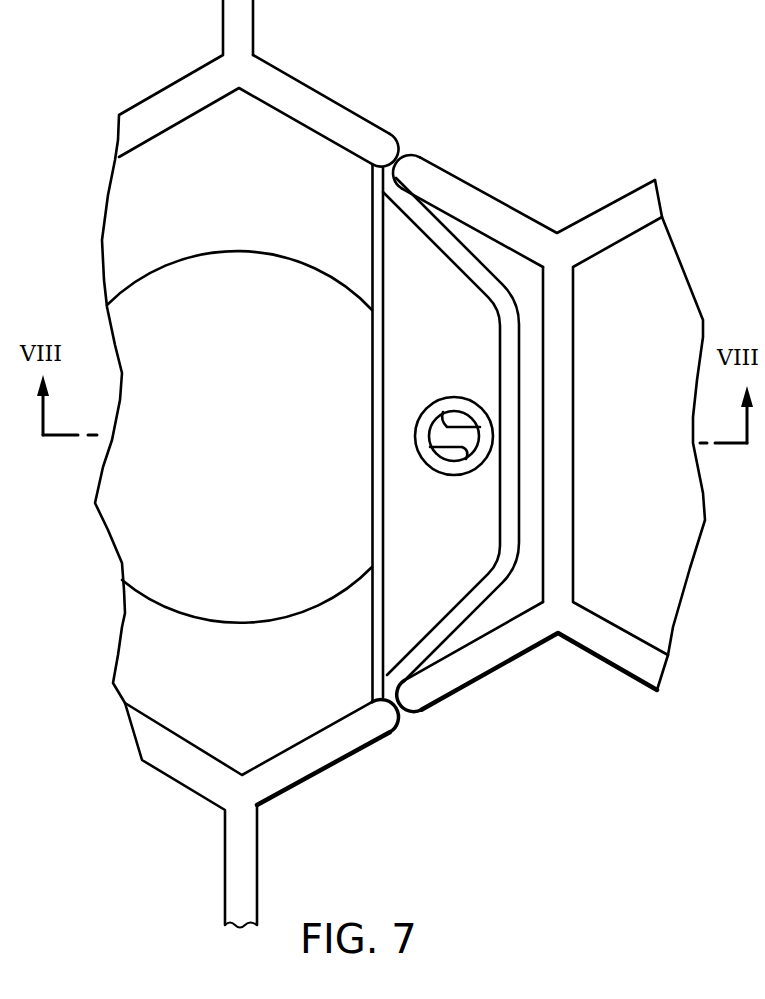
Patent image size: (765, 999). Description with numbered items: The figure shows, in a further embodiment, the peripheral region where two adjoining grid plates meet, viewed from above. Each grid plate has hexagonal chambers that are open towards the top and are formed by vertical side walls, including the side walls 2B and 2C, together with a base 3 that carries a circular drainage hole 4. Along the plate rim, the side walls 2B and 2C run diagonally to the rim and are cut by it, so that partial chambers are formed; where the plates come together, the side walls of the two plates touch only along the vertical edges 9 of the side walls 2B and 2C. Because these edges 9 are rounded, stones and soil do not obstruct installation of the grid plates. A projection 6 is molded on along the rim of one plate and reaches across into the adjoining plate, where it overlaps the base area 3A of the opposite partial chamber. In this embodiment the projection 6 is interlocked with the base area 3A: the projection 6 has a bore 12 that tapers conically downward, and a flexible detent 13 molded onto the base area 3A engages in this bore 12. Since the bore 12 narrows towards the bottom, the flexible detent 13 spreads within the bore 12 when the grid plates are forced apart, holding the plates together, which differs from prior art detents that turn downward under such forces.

The side wall 2B is at (303, 98).
The side wall 2C is at (332, 755).
The base 3 is at (298, 220).
The base area 3A is at (508, 262).
The drainage hole 4 is at (318, 270).
The projection 6 is at (438, 595).
The vertical edge 9 is at (400, 152).
The bore 12 is at (444, 398).
The flexible detent 13 is at (465, 437).